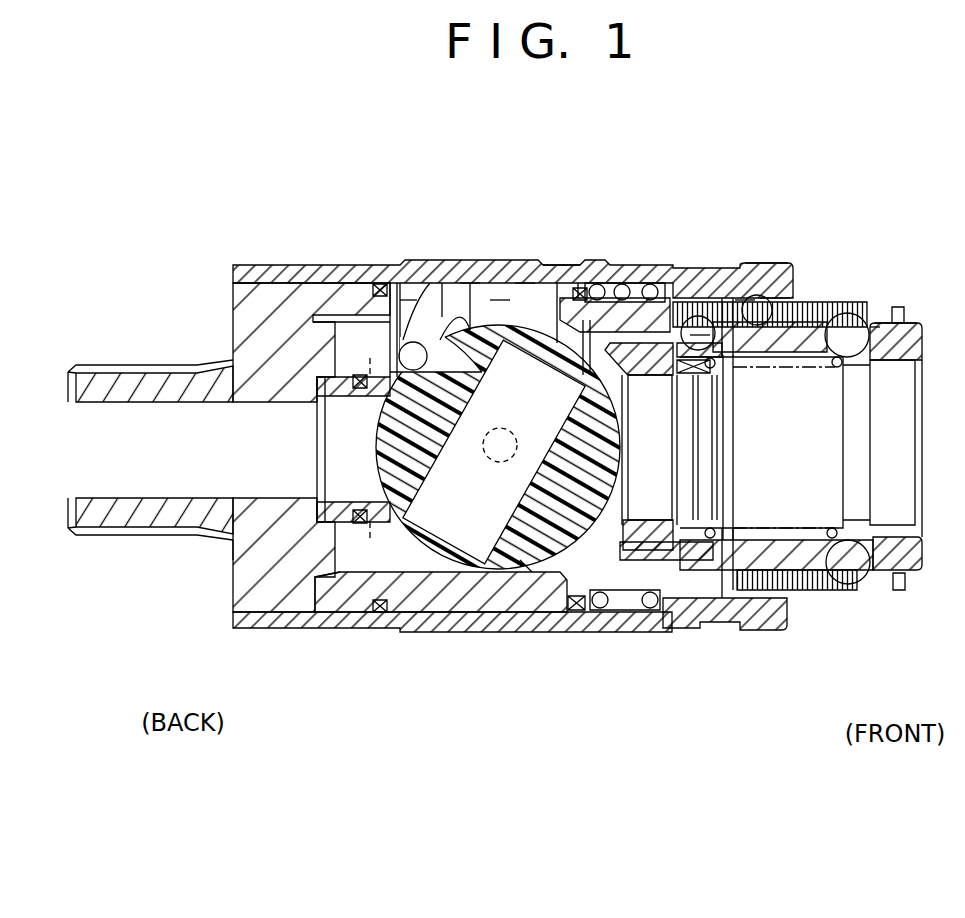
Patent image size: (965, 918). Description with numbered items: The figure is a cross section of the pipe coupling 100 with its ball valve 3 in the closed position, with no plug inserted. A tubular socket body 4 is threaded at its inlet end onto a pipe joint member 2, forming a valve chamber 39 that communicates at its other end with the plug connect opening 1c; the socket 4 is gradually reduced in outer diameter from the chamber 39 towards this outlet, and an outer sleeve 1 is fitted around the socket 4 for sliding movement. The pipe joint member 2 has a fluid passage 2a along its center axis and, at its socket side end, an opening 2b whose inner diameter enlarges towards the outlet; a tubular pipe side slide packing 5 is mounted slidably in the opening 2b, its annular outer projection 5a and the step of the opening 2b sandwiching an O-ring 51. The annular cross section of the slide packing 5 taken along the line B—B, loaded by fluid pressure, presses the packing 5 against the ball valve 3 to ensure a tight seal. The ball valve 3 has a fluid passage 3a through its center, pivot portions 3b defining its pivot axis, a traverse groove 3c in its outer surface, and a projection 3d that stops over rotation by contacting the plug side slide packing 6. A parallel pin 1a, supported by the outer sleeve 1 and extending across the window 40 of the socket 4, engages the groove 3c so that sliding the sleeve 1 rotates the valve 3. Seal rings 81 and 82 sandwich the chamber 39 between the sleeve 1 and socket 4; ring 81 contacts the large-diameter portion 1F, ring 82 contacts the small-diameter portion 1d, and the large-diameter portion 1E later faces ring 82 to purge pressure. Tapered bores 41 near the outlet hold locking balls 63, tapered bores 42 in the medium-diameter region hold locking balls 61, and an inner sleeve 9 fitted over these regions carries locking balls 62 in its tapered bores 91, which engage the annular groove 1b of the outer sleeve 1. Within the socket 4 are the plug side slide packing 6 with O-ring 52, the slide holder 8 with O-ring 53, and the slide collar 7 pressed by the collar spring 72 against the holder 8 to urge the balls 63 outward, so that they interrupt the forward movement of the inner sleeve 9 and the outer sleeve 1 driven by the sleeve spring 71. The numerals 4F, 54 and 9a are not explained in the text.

The pipe coupling 100 is at (332, 246).
The outer sleeve 1 is at (480, 262).
The parallel pin 1a is at (408, 300).
The annular groove 1b is at (790, 272).
The plug connect opening 1c is at (897, 420).
The small-diameter portion 1d is at (467, 300).
The large-diameter portion 1E is at (548, 300).
The large-diameter portion 1F is at (355, 282).
The pipe joint member 2 is at (243, 322).
The fluid passage 2a is at (135, 505).
The opening 2b is at (352, 572).
The ball valve 3 is at (498, 513).
The fluid passage 3a is at (526, 592).
The pivot portions 3b is at (492, 428).
The traverse groove 3c is at (420, 343).
The projection 3d is at (628, 393).
The tubular socket body 4 is at (315, 268).
The sleeve flange 4F is at (242, 288).
The pipe side slide packing 5 is at (345, 580).
The annular outer projection 5a is at (362, 376).
The line B— B is at (372, 446).
The O-ring 51 is at (345, 606).
The O-ring 52 is at (598, 283).
The O-ring 53 is at (624, 284).
The ball 54 is at (652, 284).
The plug side slide packing 6 is at (640, 552).
The locking ball 61 is at (700, 300).
The locking ball 62 is at (772, 298).
The locking ball 63 is at (880, 326).
The slide collar 7 is at (882, 575).
The sleeve spring 71 is at (625, 330).
The collar spring 72 is at (775, 355).
The slide holder 8 is at (680, 562).
The seal ring 81 is at (381, 284).
The seal ring 82 is at (580, 288).
The inner sleeve 9 is at (822, 318).
The locking ball 9a is at (855, 322).
The valve chamber 39 is at (496, 300).
The window 40 is at (522, 292).
The tapered bores 41 is at (913, 345).
The tapered bores 42 is at (703, 335).
The tapered bores 91 is at (746, 300).